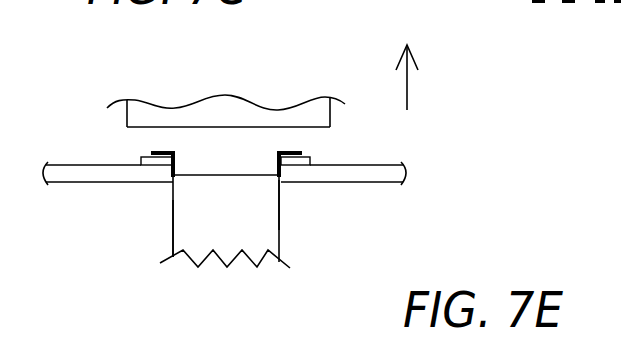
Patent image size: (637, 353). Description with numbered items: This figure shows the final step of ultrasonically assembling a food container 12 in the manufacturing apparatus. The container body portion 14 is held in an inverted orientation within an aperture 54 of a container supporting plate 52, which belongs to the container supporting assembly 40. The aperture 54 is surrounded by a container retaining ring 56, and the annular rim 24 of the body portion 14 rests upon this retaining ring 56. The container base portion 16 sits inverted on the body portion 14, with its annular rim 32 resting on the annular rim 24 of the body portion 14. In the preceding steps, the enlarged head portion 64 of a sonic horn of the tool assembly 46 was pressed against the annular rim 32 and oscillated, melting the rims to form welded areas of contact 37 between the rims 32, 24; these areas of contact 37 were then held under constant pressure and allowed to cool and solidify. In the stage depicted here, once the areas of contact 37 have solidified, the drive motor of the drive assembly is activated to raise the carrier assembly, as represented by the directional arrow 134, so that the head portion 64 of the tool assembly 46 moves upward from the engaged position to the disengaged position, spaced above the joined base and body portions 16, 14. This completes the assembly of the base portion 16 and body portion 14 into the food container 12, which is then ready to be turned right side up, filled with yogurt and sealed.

The food container 12 is at (295, 243).
The body portion 14 is at (172, 240).
The base portion 16 is at (200, 175).
The annular rim 24 is at (287, 155).
The annular rim 32 is at (163, 155).
The welded areas of contact 37 is at (305, 152).
The container supporting assembly 40 is at (397, 155).
The tool assembly 46 is at (283, 93).
The container supporting plate 52 is at (385, 172).
The aperture 54 is at (282, 192).
The container retaining ring 56 is at (152, 163).
The enlarged head portion 64 is at (313, 108).
The directional arrow 134 is at (408, 88).